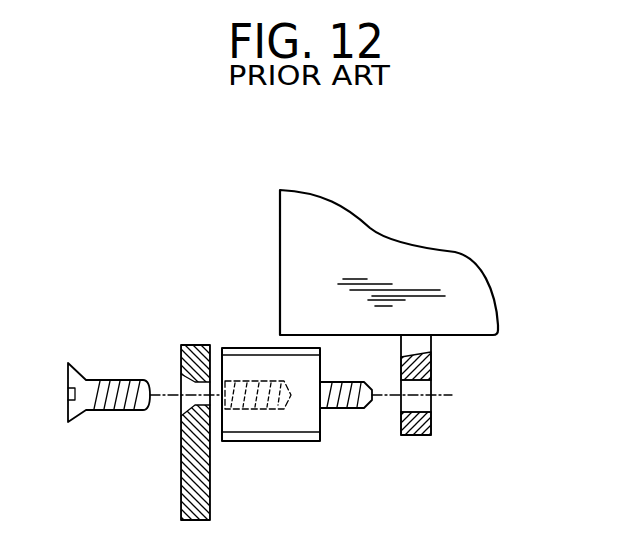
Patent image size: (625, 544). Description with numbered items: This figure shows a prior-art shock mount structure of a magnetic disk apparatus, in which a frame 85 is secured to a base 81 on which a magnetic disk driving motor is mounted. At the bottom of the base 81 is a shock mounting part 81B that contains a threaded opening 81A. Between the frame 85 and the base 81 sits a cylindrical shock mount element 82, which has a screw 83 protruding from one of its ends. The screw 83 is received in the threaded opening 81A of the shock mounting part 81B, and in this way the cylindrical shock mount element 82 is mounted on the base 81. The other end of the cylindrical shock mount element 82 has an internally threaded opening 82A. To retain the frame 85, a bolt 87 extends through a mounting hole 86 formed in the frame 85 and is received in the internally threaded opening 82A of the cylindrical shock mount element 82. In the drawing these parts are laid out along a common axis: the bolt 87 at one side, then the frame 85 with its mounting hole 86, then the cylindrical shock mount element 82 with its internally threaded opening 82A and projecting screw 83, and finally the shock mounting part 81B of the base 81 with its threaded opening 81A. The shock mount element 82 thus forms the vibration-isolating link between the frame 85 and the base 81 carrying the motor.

The base 81 is at (292, 255).
The threaded opening 81A is at (420, 405).
The shock mounting part 81B is at (430, 368).
The cylindrical shock mount element 82 is at (261, 402).
The internally threaded opening 82A is at (252, 378).
The screw 83 is at (350, 409).
The frame 85 is at (183, 473).
The mounting hole 86 is at (185, 405).
The bolt 87 is at (110, 382).